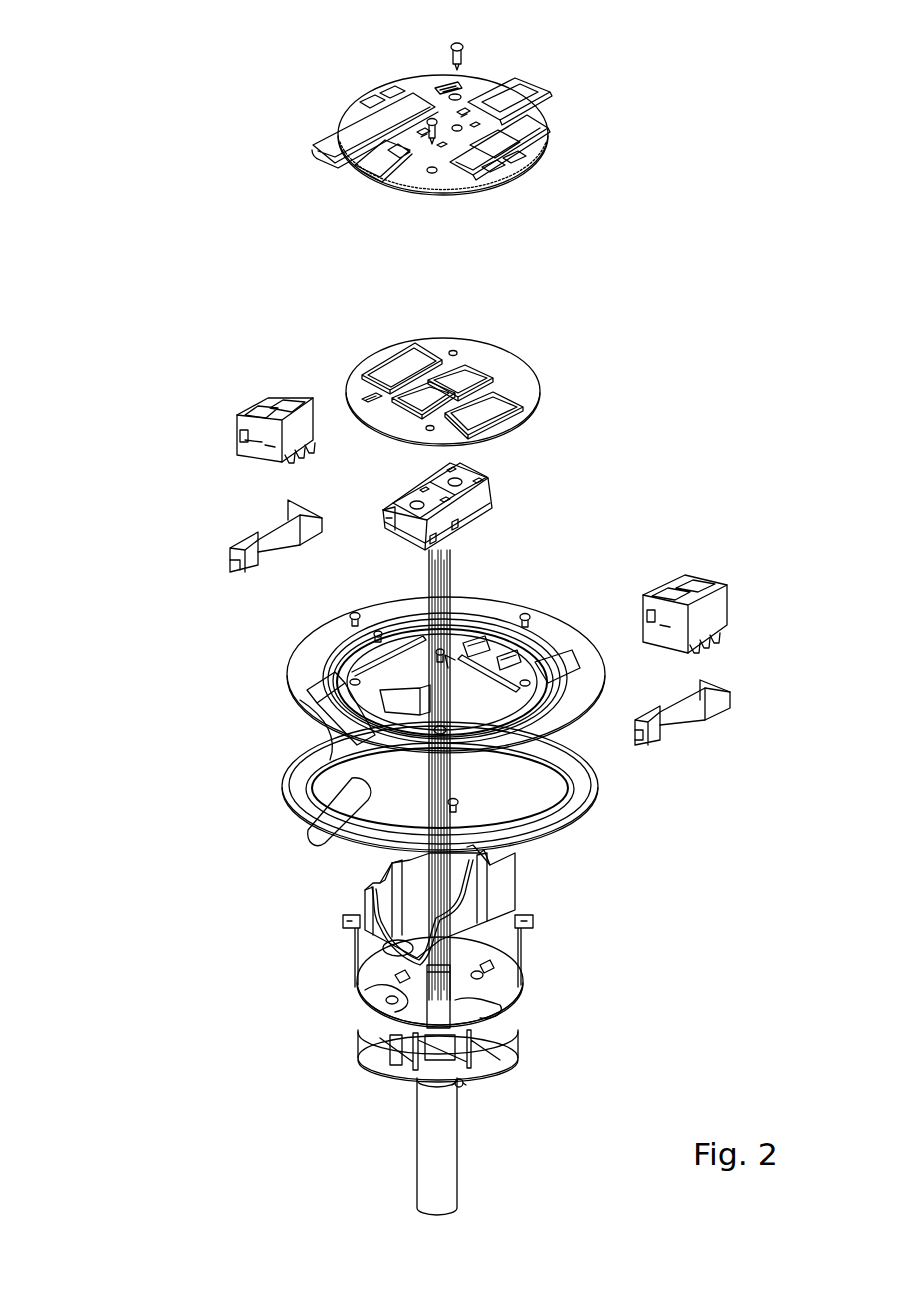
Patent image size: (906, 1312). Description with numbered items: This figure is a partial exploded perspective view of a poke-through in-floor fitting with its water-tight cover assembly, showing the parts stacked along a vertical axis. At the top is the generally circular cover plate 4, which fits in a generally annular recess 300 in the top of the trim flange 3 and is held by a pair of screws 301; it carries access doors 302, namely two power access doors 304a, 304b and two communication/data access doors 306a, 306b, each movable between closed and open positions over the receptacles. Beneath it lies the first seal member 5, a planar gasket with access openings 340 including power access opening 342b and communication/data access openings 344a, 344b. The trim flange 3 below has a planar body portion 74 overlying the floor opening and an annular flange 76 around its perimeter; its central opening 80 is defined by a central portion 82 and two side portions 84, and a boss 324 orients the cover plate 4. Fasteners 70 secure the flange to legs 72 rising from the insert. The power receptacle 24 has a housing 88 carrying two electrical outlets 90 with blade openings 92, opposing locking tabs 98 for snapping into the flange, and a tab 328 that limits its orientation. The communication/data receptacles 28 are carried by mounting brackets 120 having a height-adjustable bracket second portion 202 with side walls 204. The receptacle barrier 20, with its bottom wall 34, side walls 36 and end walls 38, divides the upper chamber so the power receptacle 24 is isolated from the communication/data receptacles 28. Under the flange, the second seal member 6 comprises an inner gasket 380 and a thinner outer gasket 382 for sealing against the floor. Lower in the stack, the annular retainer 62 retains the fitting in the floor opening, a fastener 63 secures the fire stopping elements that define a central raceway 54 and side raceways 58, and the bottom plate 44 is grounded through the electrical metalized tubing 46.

The trim flange 3 is at (394, 744).
The cover plate 4 is at (410, 83).
The first seal member 5 is at (545, 400).
The second seal member 6 is at (315, 838).
The receptacle barrier 20 is at (513, 914).
The power receptacle 24 is at (455, 566).
The communication/data receptacle 28 is at (428, 525).
The bottom wall 34 is at (425, 985).
The side wall 36 is at (380, 885).
The end wall 38 is at (513, 848).
The bottom plate 44 is at (467, 1083).
The electrical metalized tubing 46 is at (445, 1185).
The central raceway 54 is at (385, 1020).
The side raceway 58 is at (444, 1079).
The annular retainer 62 is at (438, 1004).
The fastener 63 is at (365, 1045).
The fastener 70 is at (352, 614).
The leg 72 is at (520, 958).
The planar body portion 74 is at (417, 713).
The annular flange 76 is at (302, 662).
The central opening 80 is at (495, 715).
The central portion 82 is at (335, 765).
The side portion 84 is at (305, 704).
The housing 88 is at (492, 500).
The electrical outlet 90 is at (502, 491).
The blade opening 92 is at (470, 470).
The locking tab 98 is at (415, 548).
The mounting bracket 120 is at (437, 571).
The bracket second portion 202 is at (185, 462).
The side wall 204 is at (240, 556).
The annular recess 300 is at (400, 712).
The screw 301 is at (462, 52).
The access door 302 is at (411, 134).
The power access door 304a is at (383, 161).
The power access door 304b is at (510, 101).
The communication/data access door 306a is at (500, 147).
The communication/data access door 306b is at (375, 130).
The boss 324 is at (345, 648).
The tab 328 is at (495, 482).
The access opening 340 is at (383, 356).
The power access opening 342b is at (460, 383).
The communication/data access opening 344a is at (484, 415).
The communication/data access opening 344b is at (402, 368).
The inner gasket 380 is at (548, 815).
The outer gasket 382 is at (487, 808).